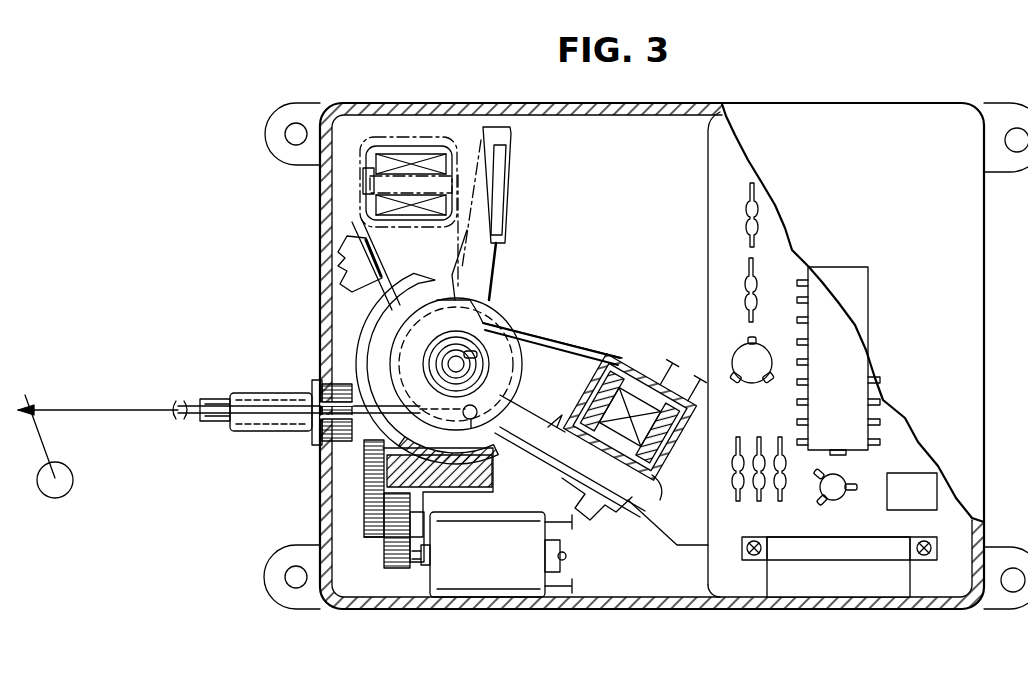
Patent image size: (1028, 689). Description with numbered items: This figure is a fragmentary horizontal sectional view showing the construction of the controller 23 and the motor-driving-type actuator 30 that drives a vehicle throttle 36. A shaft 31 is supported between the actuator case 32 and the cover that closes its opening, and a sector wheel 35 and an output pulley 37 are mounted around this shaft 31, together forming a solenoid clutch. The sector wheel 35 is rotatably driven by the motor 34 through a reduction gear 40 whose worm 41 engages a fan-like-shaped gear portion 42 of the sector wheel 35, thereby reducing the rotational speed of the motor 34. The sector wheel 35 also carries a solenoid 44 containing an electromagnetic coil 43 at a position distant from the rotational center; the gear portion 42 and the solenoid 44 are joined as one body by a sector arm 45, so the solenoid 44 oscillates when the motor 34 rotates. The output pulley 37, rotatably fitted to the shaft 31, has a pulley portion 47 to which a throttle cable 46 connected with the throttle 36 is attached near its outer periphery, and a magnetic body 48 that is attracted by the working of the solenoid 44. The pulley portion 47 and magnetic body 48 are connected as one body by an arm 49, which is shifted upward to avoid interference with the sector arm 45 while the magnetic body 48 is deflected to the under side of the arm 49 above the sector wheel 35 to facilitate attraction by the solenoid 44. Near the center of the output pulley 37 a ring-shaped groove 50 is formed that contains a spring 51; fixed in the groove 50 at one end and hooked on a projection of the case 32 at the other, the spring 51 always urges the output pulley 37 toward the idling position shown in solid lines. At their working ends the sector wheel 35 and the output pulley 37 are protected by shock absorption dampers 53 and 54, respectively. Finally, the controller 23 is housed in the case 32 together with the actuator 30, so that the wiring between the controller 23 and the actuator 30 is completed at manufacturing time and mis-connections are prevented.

The controller 23 is at (721, 588).
The actuator 30 is at (567, 271).
The shaft 31 is at (513, 346).
The actuator case 32 is at (569, 605).
The motor 34 is at (470, 588).
The sector wheel 35 is at (509, 441).
The throttle 36 is at (54, 498).
The output pulley 37 is at (540, 390).
The reduction gear 40 is at (372, 541).
The worm 41 is at (470, 490).
The gear portion 42 is at (358, 360).
The electromagnetic coil 43 is at (629, 417).
The solenoid 44 is at (657, 476).
The sector arm 45 is at (636, 418).
The throttle cable 46 is at (190, 418).
The pulley portion 47 is at (396, 356).
The magnetic body 48 is at (628, 507).
The arm 49 is at (533, 398).
The ring-shaped groove 50 is at (477, 333).
The spring 51 is at (470, 358).
The shock absorption damper 53 is at (347, 246).
The shock absorption damper 54 is at (610, 505).